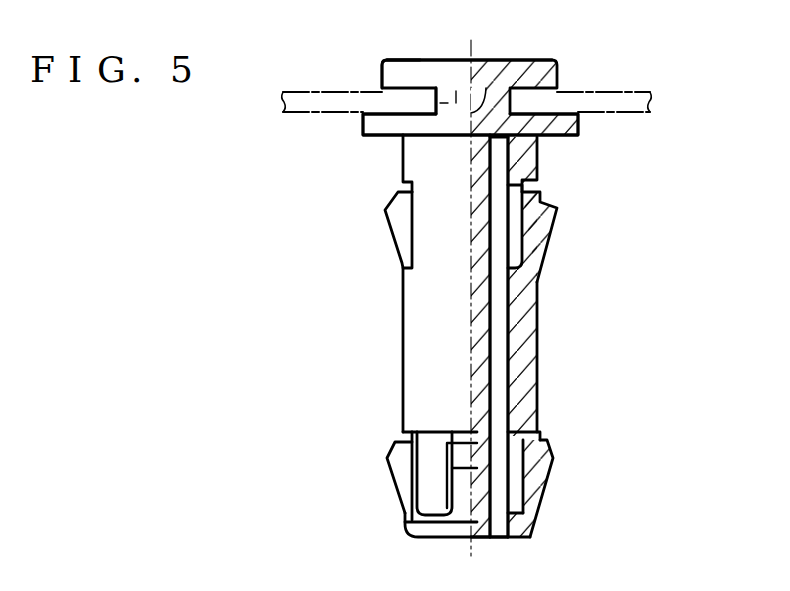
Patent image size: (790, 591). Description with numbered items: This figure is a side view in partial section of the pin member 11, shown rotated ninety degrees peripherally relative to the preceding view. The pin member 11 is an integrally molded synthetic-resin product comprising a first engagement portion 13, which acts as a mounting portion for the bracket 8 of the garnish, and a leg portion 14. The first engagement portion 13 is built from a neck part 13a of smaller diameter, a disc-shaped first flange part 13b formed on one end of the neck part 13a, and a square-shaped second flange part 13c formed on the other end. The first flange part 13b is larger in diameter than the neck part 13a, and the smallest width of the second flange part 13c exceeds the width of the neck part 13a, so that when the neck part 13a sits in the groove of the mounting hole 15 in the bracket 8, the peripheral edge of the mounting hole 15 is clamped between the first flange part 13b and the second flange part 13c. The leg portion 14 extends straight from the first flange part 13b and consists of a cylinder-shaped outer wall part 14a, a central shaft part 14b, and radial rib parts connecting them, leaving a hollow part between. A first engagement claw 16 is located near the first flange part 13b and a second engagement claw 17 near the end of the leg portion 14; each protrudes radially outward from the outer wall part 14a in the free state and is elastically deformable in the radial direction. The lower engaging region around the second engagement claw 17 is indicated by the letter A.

The panel 8 is at (606, 91).
The clip assembly 11 is at (640, 219).
The pin 13 is at (556, 54).
The pin head top 13a is at (461, 58).
The pin flange 13b is at (363, 137).
The pin head 13c is at (388, 68).
The grommet sleeve 14 is at (548, 316).
The sleeve bore 14a is at (548, 316).
The sleeve bottom 14b is at (484, 533).
The spacer 15 is at (456, 101).
The upper resilient finger 16 is at (384, 218).
The lower resilient finger 17 is at (462, 472).
The lower engaging portion A is at (566, 513).